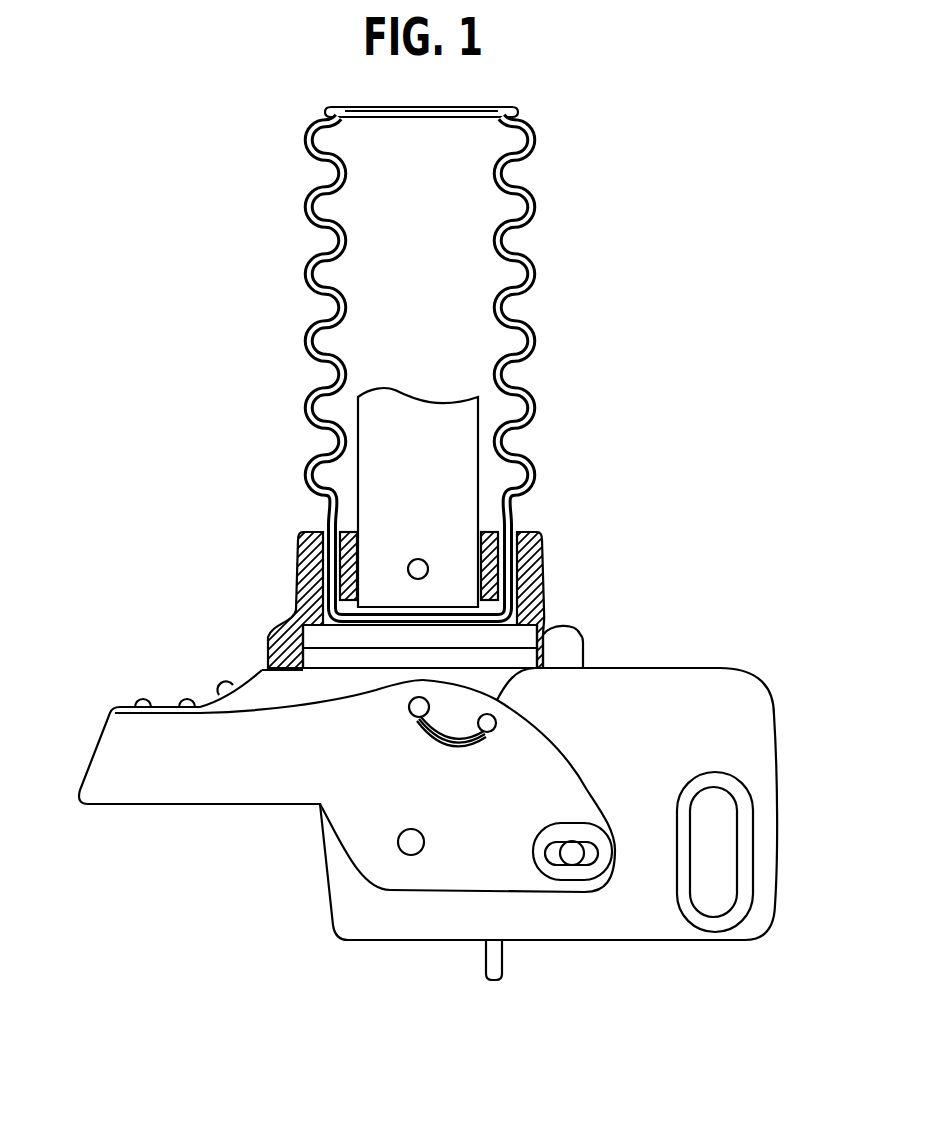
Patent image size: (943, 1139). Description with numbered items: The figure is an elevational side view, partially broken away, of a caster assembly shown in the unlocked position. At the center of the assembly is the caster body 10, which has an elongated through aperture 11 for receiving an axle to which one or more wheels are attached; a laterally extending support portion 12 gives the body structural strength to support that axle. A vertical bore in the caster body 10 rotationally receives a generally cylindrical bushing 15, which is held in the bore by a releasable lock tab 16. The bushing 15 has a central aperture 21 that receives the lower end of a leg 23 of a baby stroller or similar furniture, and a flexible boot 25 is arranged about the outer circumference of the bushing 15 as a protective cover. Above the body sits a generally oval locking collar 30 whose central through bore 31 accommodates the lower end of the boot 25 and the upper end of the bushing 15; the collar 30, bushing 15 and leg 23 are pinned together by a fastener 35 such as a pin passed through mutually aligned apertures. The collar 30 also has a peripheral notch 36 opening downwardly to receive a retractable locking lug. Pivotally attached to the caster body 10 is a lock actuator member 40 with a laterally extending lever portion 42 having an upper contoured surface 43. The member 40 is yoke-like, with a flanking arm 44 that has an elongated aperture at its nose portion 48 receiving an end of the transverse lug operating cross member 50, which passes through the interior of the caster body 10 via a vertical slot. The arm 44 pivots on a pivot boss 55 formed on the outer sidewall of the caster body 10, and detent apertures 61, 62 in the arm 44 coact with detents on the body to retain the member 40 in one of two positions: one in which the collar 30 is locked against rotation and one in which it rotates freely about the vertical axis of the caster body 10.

The caster body 10 is at (766, 678).
The elongated through aperture 11 is at (725, 848).
The laterally extending support portion 12 is at (743, 798).
The cylindrical bushing 15 is at (498, 638).
The releasable lock tab 16 is at (503, 968).
The central aperture 21 is at (495, 568).
The leg 23 is at (462, 428).
The flexible boot 25 is at (536, 207).
The locking collar 30 is at (268, 653).
The central through bore 31 is at (300, 572).
The fastener 35 is at (423, 556).
The peripheral notch 36 is at (588, 655).
The lock actuator member 40 is at (186, 804).
The lever portion 42 is at (110, 757).
The upper contoured surface 43 is at (163, 702).
The flanking arm 44 is at (497, 800).
The nose portion 48 is at (583, 878).
The lug operating cross member 50 is at (588, 838).
The pivot boss 55 is at (404, 847).
The detent aperture 61 is at (409, 711).
The detent aperture 62 is at (445, 747).